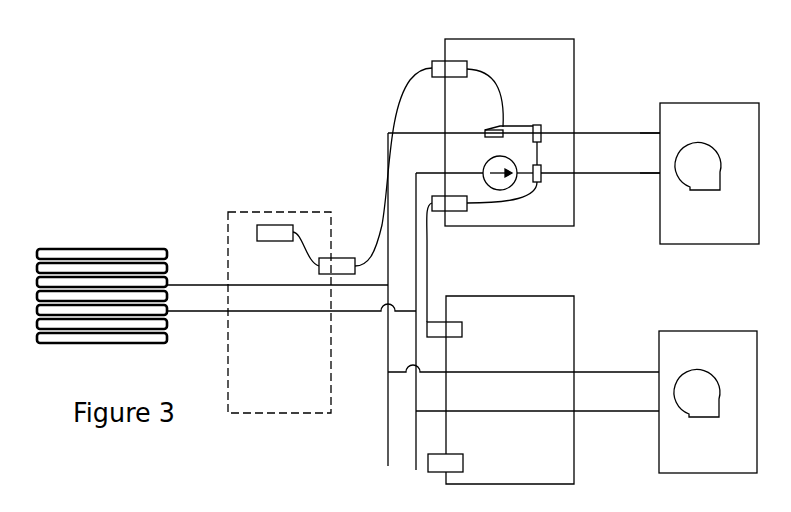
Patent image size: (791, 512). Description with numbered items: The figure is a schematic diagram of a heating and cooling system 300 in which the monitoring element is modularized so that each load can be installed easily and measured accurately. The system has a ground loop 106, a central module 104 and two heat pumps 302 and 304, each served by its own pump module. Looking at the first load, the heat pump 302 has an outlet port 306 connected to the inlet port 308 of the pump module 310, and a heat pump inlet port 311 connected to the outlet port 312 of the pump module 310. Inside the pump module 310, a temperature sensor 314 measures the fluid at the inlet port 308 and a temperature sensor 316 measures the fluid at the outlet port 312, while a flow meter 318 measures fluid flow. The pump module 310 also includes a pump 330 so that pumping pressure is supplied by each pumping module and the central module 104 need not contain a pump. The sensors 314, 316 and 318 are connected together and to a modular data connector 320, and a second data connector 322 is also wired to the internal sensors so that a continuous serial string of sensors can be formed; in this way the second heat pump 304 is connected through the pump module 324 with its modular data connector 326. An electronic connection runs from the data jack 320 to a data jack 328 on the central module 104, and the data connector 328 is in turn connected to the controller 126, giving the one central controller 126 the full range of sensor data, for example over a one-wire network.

The heating and cooling system 300 is at (186, 196).
The ground loop 106 is at (73, 249).
The central module 104 is at (333, 222).
The controller 126 is at (290, 224).
The data jack 328 is at (338, 258).
The pump module 310 is at (576, 63).
The modular data connector 320 is at (432, 63).
The flow meter 318 is at (487, 130).
The temperature sensor 314 is at (538, 125).
The temperature sensor 316 is at (541, 166).
The pump 330 is at (488, 163).
The second data connector 322 is at (460, 211).
The inlet port 308 is at (578, 133).
The outlet port 312 is at (579, 174).
The outlet port 306 is at (659, 132).
The heat pump inlet port 311 is at (659, 172).
The heat pump 302 is at (750, 245).
The pump module 324 is at (577, 298).
The modular data connector 326 is at (428, 322).
The heat pump 304 is at (750, 474).